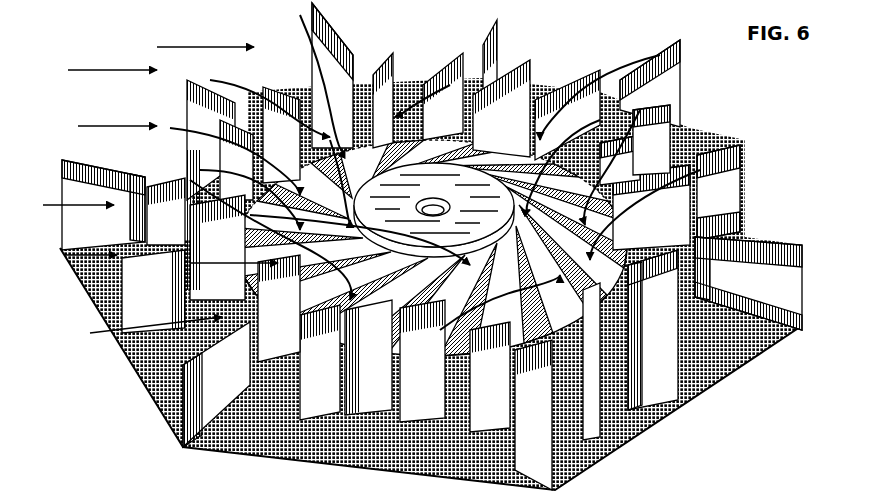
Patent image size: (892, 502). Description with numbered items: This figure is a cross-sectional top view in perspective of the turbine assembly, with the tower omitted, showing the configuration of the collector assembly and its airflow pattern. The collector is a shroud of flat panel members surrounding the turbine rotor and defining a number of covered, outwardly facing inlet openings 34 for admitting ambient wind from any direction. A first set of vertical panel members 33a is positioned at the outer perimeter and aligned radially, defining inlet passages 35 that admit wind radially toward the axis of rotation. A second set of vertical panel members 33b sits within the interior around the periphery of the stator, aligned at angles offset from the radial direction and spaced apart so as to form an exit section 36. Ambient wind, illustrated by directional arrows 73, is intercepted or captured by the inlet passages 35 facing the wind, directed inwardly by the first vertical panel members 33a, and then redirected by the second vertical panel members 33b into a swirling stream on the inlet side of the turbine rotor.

The first set of vertical panel members 33a is at (90, 185).
The second set of vertical panel members 33b is at (670, 197).
The inlet openings 34 is at (712, 120).
The inlet passages 35 is at (170, 355).
The exit section 36 is at (506, 96).
The directional arrows 73 is at (355, 184).